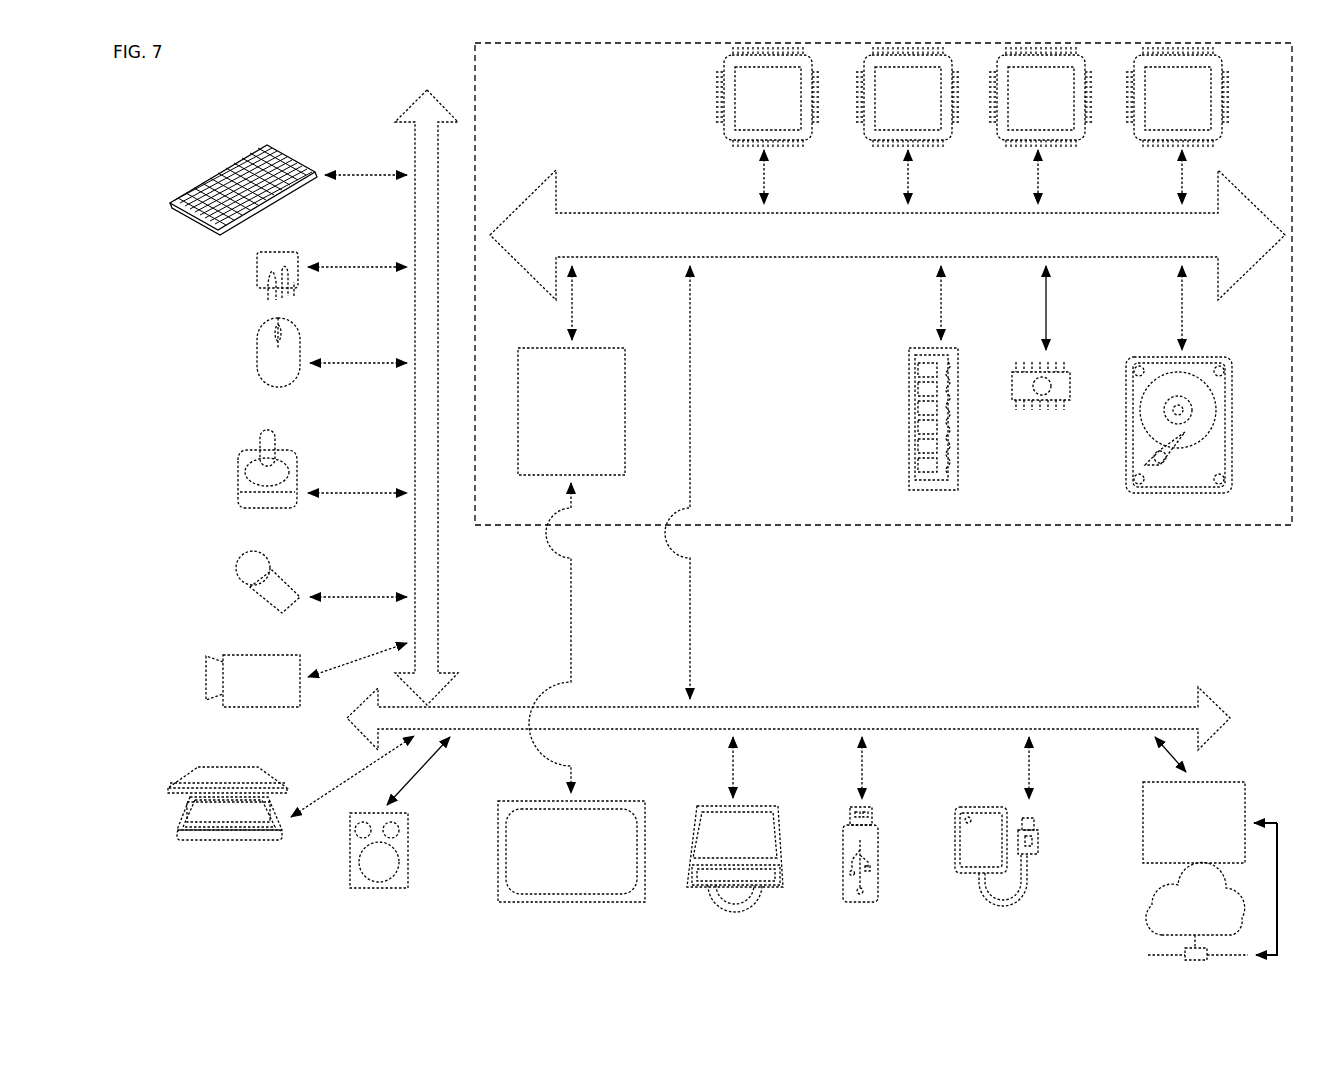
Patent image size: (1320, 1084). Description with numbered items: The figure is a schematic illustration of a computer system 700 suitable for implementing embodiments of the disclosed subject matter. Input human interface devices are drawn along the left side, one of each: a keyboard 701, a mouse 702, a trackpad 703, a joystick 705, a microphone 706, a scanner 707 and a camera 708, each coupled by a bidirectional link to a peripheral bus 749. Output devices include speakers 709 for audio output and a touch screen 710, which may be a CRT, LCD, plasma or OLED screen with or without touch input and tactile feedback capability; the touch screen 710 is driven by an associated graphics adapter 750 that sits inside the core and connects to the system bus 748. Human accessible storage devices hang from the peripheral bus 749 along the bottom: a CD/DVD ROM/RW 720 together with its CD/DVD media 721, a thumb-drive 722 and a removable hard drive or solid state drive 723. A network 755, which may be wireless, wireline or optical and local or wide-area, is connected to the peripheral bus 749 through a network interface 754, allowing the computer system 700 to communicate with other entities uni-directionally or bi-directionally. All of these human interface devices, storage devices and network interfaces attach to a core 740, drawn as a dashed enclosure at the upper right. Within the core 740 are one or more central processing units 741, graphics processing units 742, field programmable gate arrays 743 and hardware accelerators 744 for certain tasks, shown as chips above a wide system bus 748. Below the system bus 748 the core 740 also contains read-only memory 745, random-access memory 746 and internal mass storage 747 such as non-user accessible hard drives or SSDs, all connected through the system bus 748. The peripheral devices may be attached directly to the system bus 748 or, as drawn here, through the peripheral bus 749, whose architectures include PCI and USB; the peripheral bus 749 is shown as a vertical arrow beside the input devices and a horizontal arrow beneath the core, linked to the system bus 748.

The computer system 700 is at (699, 502).
The keyboard 701 is at (172, 203).
The mouse 702 is at (257, 352).
The trackpad 703 is at (257, 270).
The joystick 705 is at (238, 492).
The microphone 706 is at (237, 568).
The scanner 707 is at (172, 825).
The camera 708 is at (212, 678).
The speakers 709 is at (378, 890).
The touch screen 710 is at (572, 903).
The CD/DVD ROM/RW 720 is at (754, 845).
The CD/DVD media 721 is at (717, 898).
The thumb-drive 722 is at (860, 903).
The removable hard drive or solid state drive 723 is at (958, 878).
The core 740 is at (877, 527).
The central processing unit 741 is at (768, 125).
The graphics processing unit 742 is at (908, 125).
The field programmable gate array 743 is at (1041, 125).
The hardware accelerator 744 is at (1178, 125).
The read-only memory 745 is at (1032, 412).
The random-access memory 746 is at (912, 416).
The internal mass storage 747 is at (1143, 357).
The system bus 748 is at (887, 235).
The peripheral bus 749 is at (412, 127).
The graphics adapter 750 is at (571, 370).
The network interface 754 is at (1210, 846).
The network 755 is at (1148, 920).